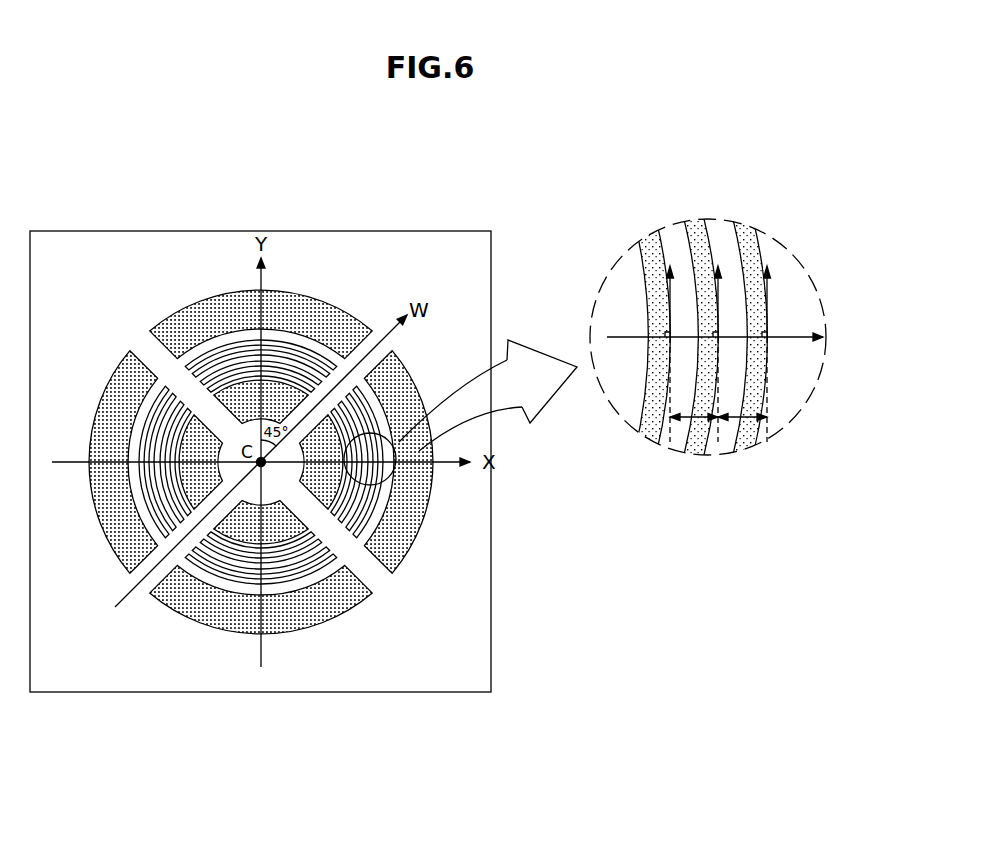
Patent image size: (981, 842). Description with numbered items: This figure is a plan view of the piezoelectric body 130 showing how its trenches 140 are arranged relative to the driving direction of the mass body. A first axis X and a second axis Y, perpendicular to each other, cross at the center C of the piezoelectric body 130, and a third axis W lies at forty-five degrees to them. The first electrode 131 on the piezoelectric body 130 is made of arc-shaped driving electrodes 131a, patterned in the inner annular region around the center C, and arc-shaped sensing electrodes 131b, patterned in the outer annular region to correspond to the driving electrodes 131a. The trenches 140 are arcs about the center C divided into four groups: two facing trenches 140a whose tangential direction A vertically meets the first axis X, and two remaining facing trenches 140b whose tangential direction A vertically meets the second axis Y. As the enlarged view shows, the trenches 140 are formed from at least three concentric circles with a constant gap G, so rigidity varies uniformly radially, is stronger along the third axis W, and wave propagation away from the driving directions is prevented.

The piezoelectric body 130 is at (338, 250).
The first electrode 131 is at (233, 172).
The driving electrodes 131a is at (212, 418).
The sensing electrodes 131b is at (138, 370).
The trenches 140 is at (335, 757).
The two trenches facing each other 140a is at (325, 515).
The two remaining trenches facing each other 140b is at (325, 515).